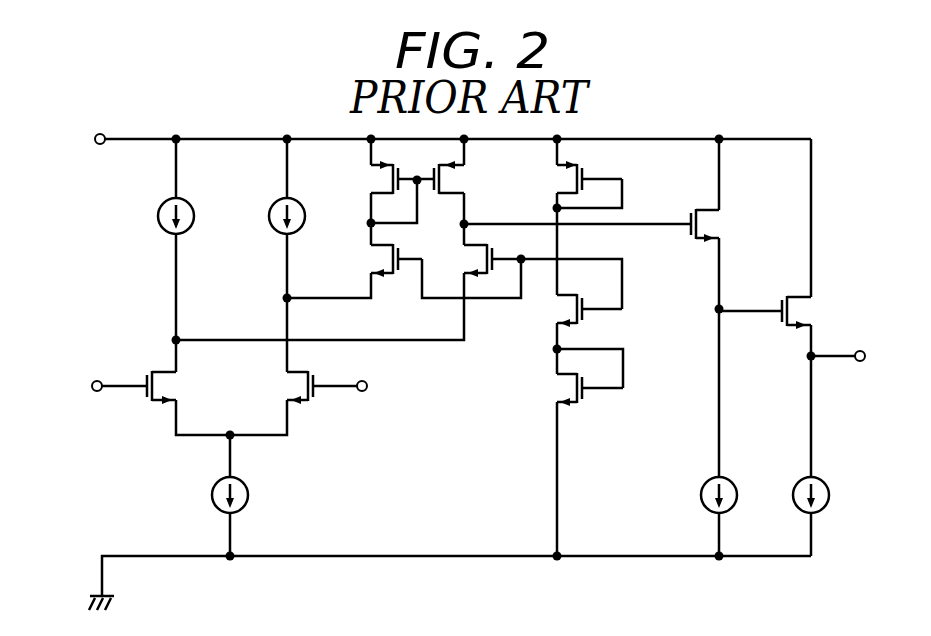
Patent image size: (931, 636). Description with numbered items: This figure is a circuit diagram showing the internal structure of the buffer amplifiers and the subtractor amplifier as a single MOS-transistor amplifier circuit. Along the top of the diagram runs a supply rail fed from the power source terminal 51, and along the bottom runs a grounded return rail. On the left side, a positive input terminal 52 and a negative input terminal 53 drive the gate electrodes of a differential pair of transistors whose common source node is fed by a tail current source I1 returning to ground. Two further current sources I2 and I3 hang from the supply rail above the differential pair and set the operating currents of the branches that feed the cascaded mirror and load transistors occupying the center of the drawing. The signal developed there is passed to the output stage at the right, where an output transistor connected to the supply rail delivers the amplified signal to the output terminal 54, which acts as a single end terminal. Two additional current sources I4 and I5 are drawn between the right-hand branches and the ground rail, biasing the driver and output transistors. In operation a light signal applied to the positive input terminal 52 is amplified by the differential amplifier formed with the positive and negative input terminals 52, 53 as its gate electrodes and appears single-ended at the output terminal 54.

The power source terminal 51 is at (95, 136).
The positive input terminal 52 is at (92, 384).
The negative input terminal 53 is at (367, 385).
The output terminal 54 is at (865, 354).
The current source I1 is at (246, 495).
The current source I2 is at (191, 216).
The current source I3 is at (302, 216).
The current source I4 is at (734, 495).
The current source I5 is at (826, 495).